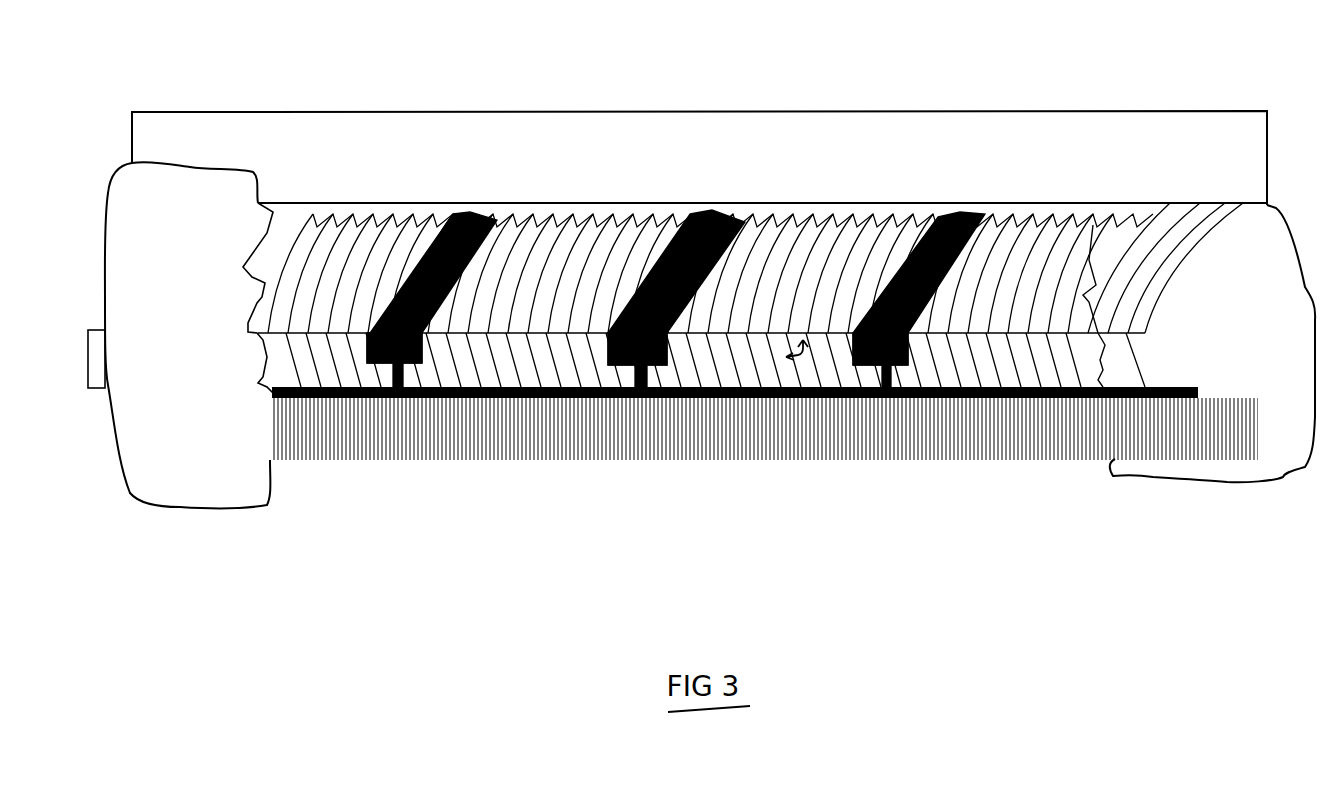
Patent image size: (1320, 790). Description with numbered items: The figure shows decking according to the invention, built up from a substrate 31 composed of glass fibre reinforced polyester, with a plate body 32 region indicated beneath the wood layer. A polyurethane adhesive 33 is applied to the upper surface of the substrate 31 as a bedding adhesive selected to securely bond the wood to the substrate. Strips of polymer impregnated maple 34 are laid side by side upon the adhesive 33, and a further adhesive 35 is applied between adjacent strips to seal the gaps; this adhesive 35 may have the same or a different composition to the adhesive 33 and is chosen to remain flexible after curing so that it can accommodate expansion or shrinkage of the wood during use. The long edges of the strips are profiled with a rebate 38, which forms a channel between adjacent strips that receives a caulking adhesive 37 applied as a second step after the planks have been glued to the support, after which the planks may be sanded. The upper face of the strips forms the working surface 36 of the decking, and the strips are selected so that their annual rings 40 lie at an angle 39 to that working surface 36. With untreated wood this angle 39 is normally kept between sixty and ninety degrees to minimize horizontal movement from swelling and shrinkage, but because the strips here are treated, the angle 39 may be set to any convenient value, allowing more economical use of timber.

The substrate 31 is at (738, 458).
The plate body 32 is at (765, 496).
The adhesive 33 is at (459, 406).
The strips of polymer impregnated maple 34 is at (346, 371).
The adhesive 35 is at (644, 403).
The working surface 36 is at (836, 214).
The caulking adhesive 37 is at (480, 217).
The rebate 38 is at (606, 363).
The angle 39 is at (813, 378).
The annual rings 40 is at (1072, 384).